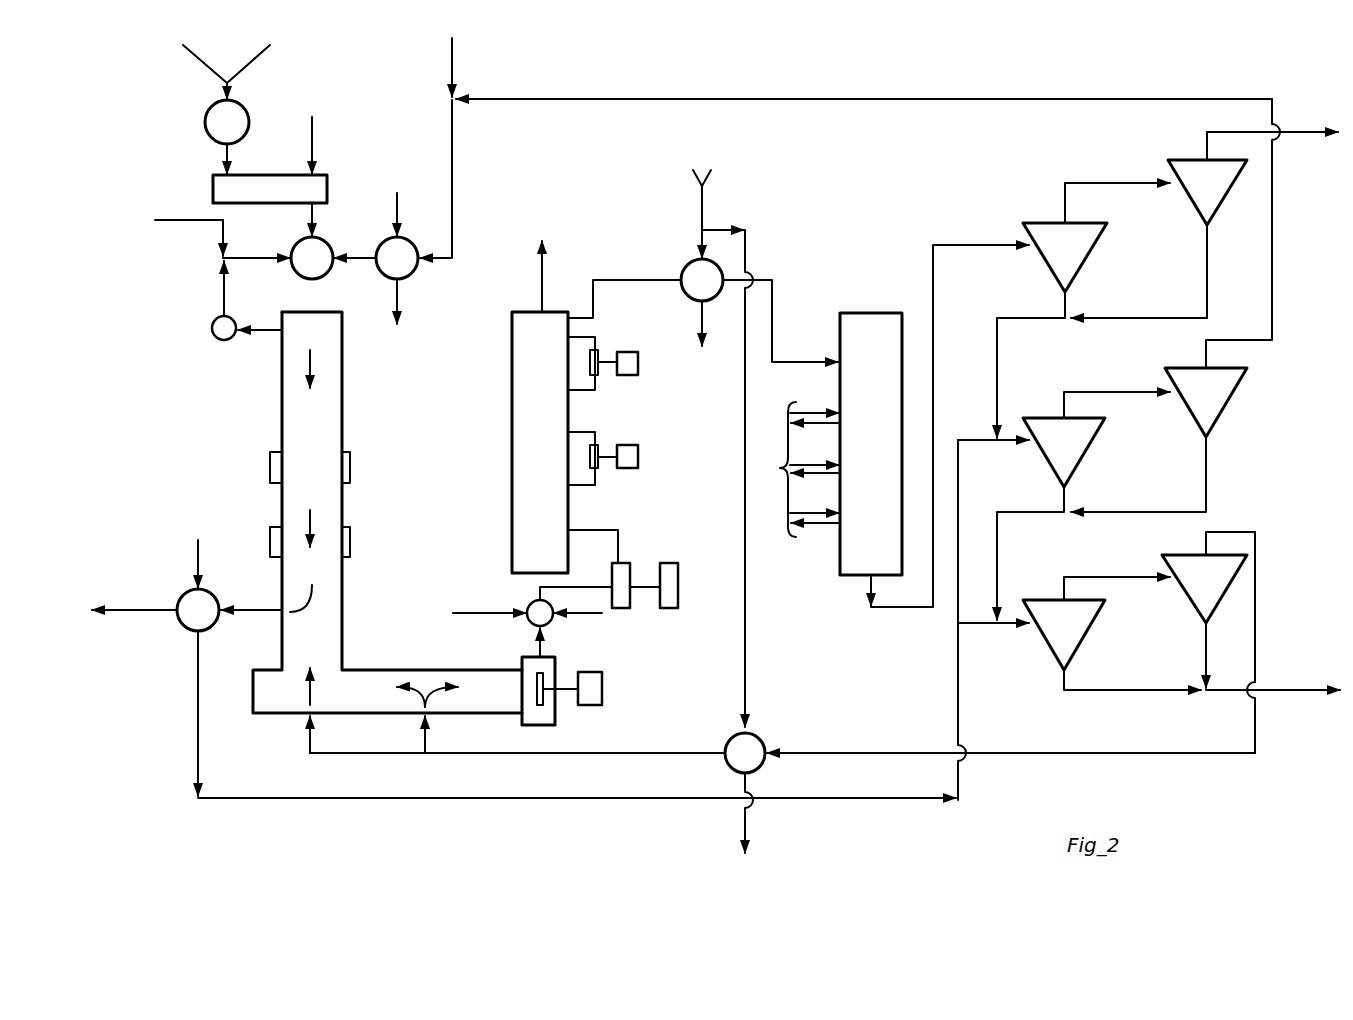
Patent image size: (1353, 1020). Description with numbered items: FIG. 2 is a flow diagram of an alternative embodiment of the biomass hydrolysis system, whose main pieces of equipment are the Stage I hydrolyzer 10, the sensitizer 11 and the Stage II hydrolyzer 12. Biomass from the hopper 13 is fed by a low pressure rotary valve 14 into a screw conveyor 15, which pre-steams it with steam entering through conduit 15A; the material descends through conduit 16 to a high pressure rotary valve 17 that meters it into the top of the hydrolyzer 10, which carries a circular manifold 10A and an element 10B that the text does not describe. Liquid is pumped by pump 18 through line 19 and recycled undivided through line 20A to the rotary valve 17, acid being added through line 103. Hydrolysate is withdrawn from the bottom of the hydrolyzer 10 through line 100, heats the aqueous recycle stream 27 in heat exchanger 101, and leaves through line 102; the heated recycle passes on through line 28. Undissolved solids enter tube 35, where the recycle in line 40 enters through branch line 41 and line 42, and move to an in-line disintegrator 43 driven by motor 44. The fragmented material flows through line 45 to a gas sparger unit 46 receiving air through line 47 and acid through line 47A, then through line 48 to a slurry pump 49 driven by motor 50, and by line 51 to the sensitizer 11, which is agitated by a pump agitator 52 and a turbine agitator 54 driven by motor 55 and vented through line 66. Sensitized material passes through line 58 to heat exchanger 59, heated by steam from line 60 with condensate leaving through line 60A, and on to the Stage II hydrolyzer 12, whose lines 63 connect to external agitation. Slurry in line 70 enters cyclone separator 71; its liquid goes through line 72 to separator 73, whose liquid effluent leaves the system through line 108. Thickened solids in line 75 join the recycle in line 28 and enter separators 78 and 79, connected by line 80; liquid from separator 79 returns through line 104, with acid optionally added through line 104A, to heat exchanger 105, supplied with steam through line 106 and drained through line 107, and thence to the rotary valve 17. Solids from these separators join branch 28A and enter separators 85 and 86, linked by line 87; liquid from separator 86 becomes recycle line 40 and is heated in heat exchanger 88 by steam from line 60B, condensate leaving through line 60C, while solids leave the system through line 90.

The Stage I hydrolyzer 10 is at (353, 410).
The circular manifold 10A is at (354, 471).
The lower heater 10B is at (350, 540).
The sensitizer 11 is at (506, 407).
The Stage II hydrolyzer 12 is at (830, 338).
The hopper 13 is at (260, 58).
The low pressure rotary valve 14 is at (218, 133).
The screw conveyor 15 is at (256, 174).
The steam conduit 15A is at (313, 136).
The conduit 16 is at (316, 224).
The high pressure rotary valve 17 is at (304, 270).
The pump 18 is at (210, 330).
The liquid phase line 19 is at (256, 327).
The recycle line 20A is at (258, 248).
The aqueous recycle stream line 27 is at (199, 562).
The heated recycle line 28 is at (194, 740).
The branch of recycle line 28A is at (1005, 626).
The tube 35 is at (362, 696).
The recycle line 40 is at (589, 753).
The branch line 41 is at (306, 744).
The line 42 is at (422, 746).
The in-line disintegrator 43 is at (528, 698).
The motor 44 is at (602, 695).
The line 45 is at (532, 646).
The gas sparger unit 46 is at (530, 606).
The gas line 47 is at (468, 612).
The acid line 47A is at (583, 614).
The line 48 is at (610, 572).
The slurry pump 49 is at (642, 574).
The motor 50 is at (678, 566).
The line 51 is at (599, 530).
The pump agitator 52 is at (600, 442).
The turbine agitator 54 is at (602, 350).
The motor 55 is at (638, 362).
The line 58 is at (600, 278).
The heat exchanger 59 is at (694, 292).
The steam line 60 is at (696, 198).
The condensate line 60A is at (690, 328).
The steam line 60B is at (748, 672).
The condensate line 60C is at (748, 822).
The lines 63 is at (794, 469).
The vent line 66 is at (536, 273).
The slurry line 70 is at (960, 244).
The cyclone separator 71 is at (1057, 258).
The line 72 is at (1097, 182).
The cyclone separator 73 is at (1199, 195).
The thickened solids line 75 is at (1010, 318).
The cyclone separator 78 is at (1056, 453).
The cyclone separator 79 is at (1198, 403).
The line 80 is at (1120, 392).
The cyclone separator 85 is at (1056, 635).
The cyclone separator 86 is at (1198, 590).
The line 87 is at (1102, 584).
The heat exchanger 88 is at (737, 765).
The solids outlet line 90 is at (1288, 688).
The hydrolysate withdrawal line 100 is at (248, 609).
The heat exchanger 101 is at (182, 596).
The hydrolysate outlet line 102 is at (144, 606).
The acid line 103 is at (191, 214).
The recycle line 104 is at (553, 99).
The acid line 104A is at (456, 62).
The heat exchanger 105 is at (413, 274).
The steam supply line 106 is at (399, 212).
The steam outlet line 107 is at (402, 304).
The effluent line 108 is at (1308, 126).